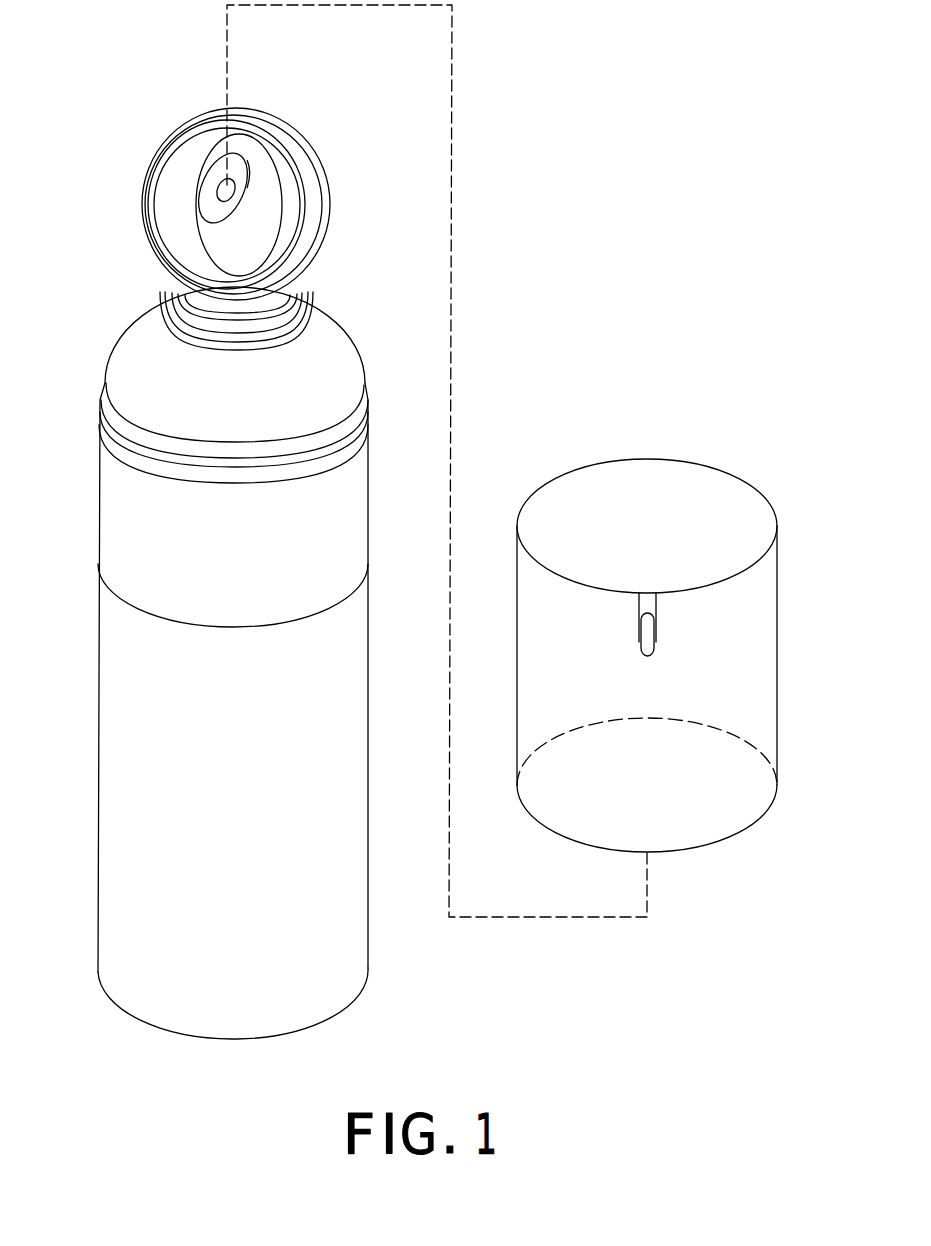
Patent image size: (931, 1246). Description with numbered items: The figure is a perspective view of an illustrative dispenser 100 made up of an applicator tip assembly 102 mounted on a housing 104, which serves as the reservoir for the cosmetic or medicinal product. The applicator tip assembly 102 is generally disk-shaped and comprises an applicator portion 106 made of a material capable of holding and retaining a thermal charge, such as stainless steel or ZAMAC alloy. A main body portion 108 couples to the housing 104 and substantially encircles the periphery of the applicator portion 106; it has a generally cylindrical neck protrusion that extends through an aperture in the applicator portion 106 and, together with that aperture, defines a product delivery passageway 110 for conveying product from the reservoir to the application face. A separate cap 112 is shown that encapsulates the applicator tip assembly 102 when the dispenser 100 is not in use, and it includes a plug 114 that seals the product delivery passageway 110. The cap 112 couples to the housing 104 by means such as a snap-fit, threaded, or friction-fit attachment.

The dispenser 100 is at (146, 57).
The applicator tip assembly 102 is at (173, 130).
The housing 104 is at (338, 937).
The applicator portion 106 is at (182, 219).
The main body portion 108 is at (237, 173).
The product delivery passageway 110 is at (228, 185).
The cap 112 is at (685, 423).
The plug 114 is at (640, 612).